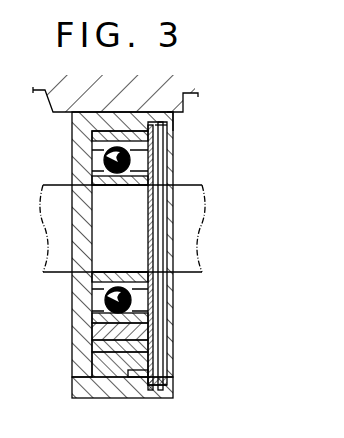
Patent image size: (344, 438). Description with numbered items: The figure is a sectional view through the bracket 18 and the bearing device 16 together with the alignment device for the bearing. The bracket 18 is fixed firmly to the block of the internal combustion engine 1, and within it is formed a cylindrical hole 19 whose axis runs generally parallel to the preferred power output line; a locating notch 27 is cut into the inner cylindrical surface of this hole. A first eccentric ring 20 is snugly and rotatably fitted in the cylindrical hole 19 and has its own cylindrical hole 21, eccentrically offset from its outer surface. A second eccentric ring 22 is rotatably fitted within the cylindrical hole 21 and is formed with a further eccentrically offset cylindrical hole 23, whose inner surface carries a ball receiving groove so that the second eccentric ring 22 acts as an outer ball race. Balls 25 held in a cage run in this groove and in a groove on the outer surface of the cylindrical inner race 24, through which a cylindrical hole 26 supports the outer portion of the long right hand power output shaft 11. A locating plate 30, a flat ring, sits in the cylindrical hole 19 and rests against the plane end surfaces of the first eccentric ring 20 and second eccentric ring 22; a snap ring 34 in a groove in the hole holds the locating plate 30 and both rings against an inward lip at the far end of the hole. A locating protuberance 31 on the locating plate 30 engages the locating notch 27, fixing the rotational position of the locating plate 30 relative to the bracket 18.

The internal combustion engine 1 is at (44, 94).
The long right hand power output shaft 11 is at (195, 213).
The bearing device 16 is at (184, 141).
The bracket 18 is at (175, 120).
The cylindrical hole 19 is at (93, 392).
The first eccentric ring 20 is at (98, 370).
The cylindrical hole 21 is at (98, 345).
The second eccentric ring 22 is at (100, 320).
The cylindrical hole 23 is at (100, 298).
The inner race 24 is at (128, 282).
The balls 25 is at (158, 300).
The cylindrical hole 26 is at (100, 270).
The locating notch 27 is at (133, 393).
The locating plate 30 is at (160, 337).
The locating protuberance 31 is at (150, 393).
The snap ring 34 is at (160, 132).